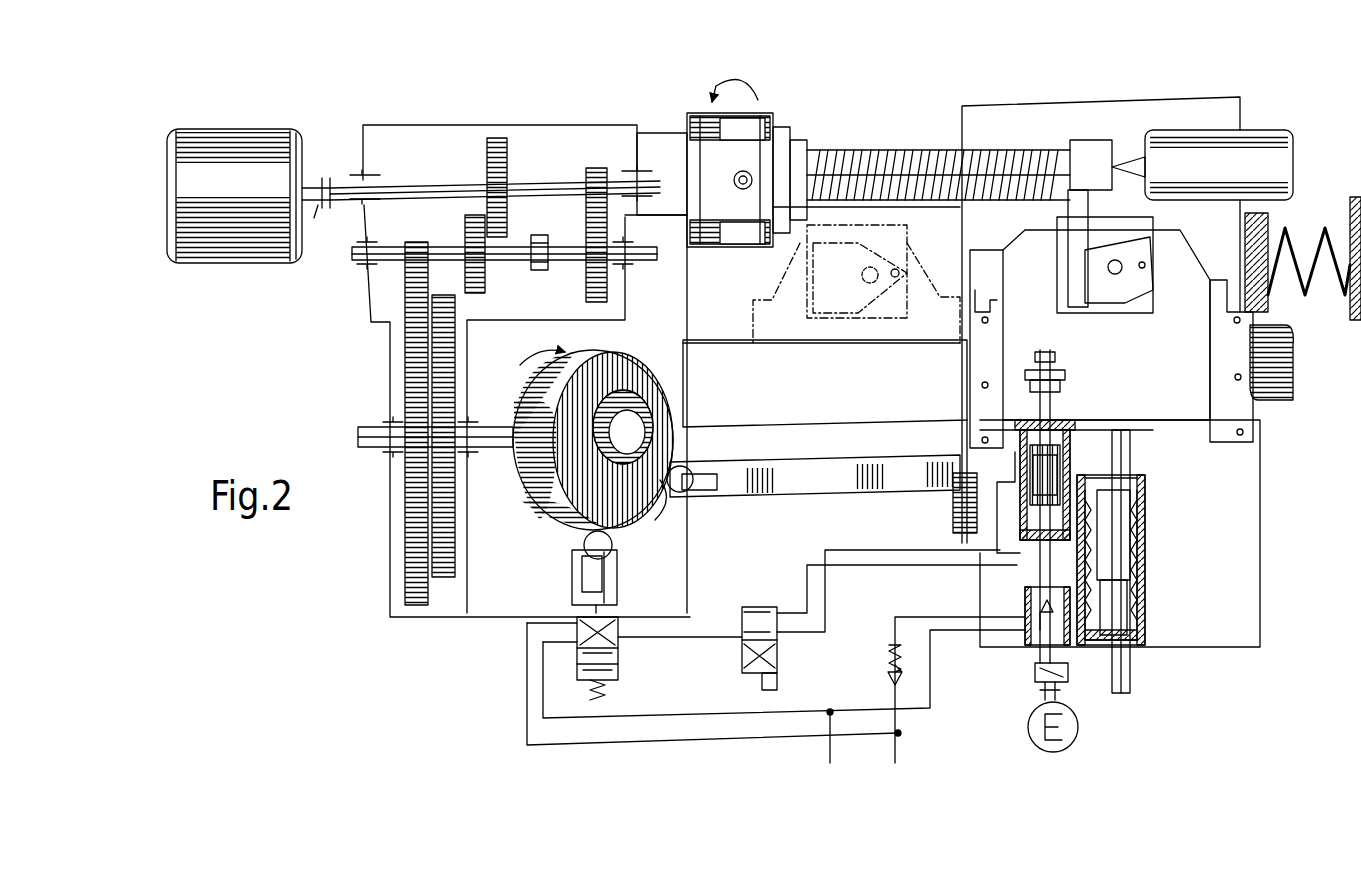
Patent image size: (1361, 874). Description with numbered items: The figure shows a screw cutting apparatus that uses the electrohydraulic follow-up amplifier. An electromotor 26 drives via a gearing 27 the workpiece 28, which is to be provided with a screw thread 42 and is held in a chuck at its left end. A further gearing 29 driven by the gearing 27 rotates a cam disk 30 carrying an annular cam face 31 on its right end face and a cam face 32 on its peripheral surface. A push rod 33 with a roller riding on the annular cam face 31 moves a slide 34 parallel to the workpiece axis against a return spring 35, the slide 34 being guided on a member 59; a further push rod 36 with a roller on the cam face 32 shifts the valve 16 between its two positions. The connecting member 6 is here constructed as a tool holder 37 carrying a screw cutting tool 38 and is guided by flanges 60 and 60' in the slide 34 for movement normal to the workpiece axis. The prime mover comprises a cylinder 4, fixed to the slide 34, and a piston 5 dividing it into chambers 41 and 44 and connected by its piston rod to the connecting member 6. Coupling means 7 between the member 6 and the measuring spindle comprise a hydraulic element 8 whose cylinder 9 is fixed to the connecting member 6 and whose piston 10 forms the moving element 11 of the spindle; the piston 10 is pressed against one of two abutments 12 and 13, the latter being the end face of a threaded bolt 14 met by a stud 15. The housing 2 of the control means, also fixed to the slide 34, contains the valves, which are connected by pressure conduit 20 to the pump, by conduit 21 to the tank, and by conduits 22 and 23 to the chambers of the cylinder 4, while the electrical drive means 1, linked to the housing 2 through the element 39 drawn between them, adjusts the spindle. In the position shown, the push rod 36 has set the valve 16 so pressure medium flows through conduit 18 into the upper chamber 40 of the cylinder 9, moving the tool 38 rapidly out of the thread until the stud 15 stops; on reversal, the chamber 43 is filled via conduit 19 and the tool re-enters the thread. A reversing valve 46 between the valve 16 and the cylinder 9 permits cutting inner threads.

The electrical drive means 1 is at (1030, 735).
The housing 2 is at (1025, 640).
The cylinder 4 is at (1152, 600).
The piston 5 is at (1145, 565).
The connecting member 6 is at (1200, 366).
The coupling means 7 is at (1015, 475).
The hydraulic element 8 is at (1090, 447).
The cylinder 9 is at (1105, 527).
The piston 10 is at (1078, 463).
The moving element 11 is at (1005, 433).
The abutment 12 is at (1065, 430).
The abutment 13 is at (1050, 420).
The threaded bolt 14 is at (1040, 355).
The stud 15 is at (1035, 385).
The valve 16 is at (578, 672).
The conduit 18 is at (827, 550).
The conduit 19 is at (800, 582).
The pressure conduit 20 is at (940, 617).
The conduit 21 is at (947, 633).
The conduit 22 is at (1123, 520).
The conduit 23 is at (1125, 680).
The electromotor 26 is at (290, 233).
The gearing 27 is at (358, 295).
The workpiece 28 is at (912, 140).
The further gearing 29 is at (403, 376).
The cam disk 30 is at (645, 385).
The annular cam face 31 is at (655, 410).
The cam face 32 is at (540, 480).
The push rod 33 is at (787, 490).
The slide 34 is at (1240, 530).
The return spring 35 is at (1300, 285).
The further push rod 36 is at (612, 585).
The tool holder 37 is at (1200, 405).
The screw cutting tool 38 is at (1072, 208).
The coupling 39 is at (1075, 660).
The upper chamber 40 is at (1060, 445).
The chamber 41 is at (1140, 535).
The screw thread 42 is at (860, 150).
The chamber 43 is at (960, 505).
The chamber 44 is at (1148, 620).
The reversing valve 46 is at (742, 648).
The member 59 is at (758, 352).
The flange 60 is at (1268, 256).
The flange 60' is at (987, 286).